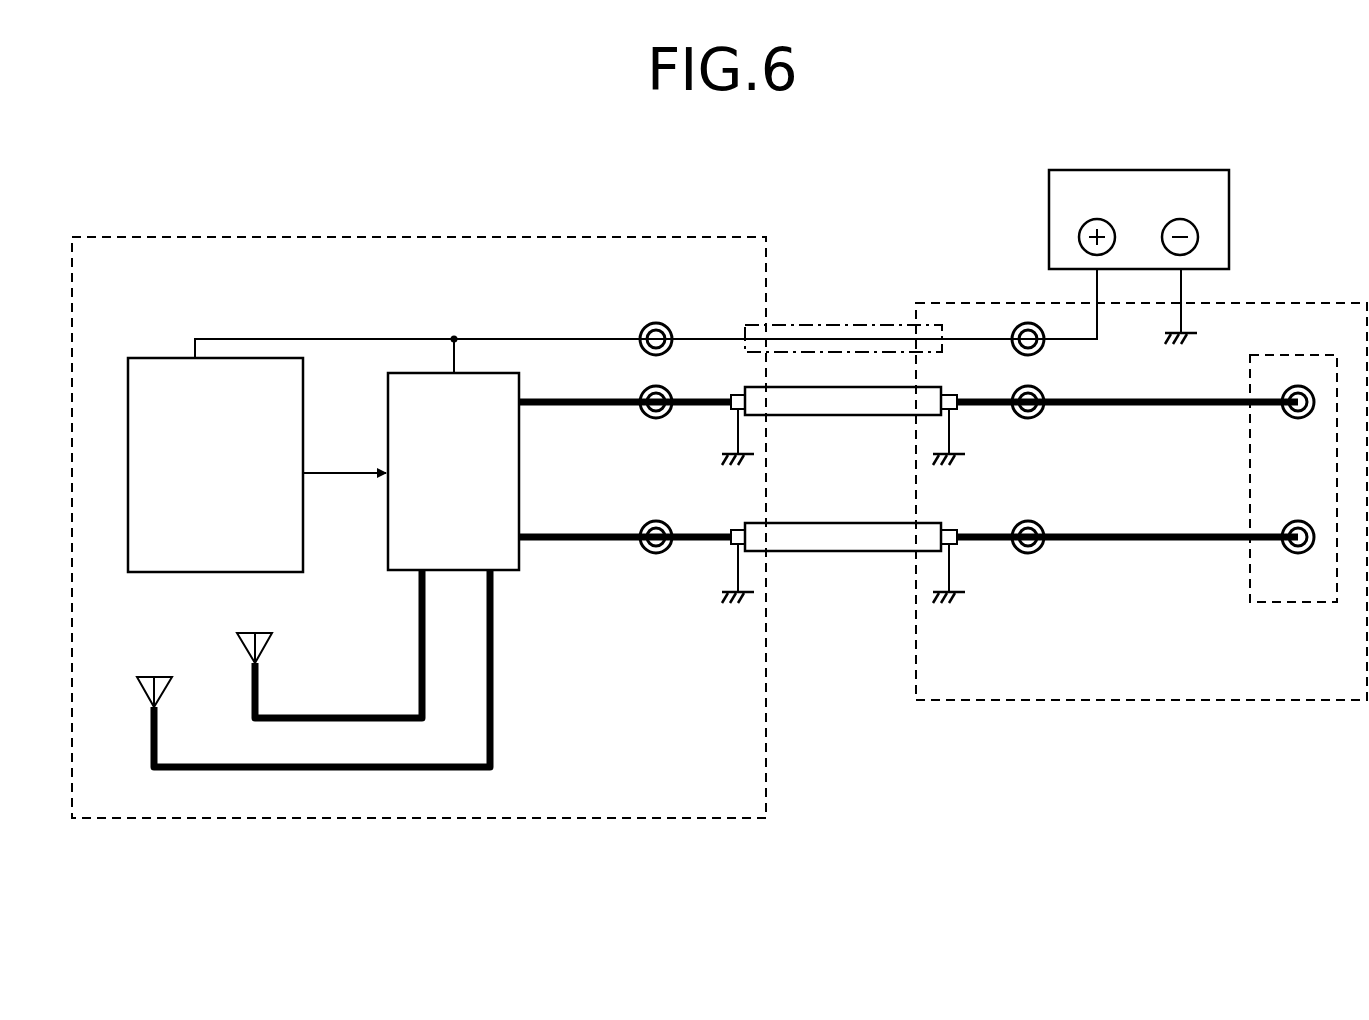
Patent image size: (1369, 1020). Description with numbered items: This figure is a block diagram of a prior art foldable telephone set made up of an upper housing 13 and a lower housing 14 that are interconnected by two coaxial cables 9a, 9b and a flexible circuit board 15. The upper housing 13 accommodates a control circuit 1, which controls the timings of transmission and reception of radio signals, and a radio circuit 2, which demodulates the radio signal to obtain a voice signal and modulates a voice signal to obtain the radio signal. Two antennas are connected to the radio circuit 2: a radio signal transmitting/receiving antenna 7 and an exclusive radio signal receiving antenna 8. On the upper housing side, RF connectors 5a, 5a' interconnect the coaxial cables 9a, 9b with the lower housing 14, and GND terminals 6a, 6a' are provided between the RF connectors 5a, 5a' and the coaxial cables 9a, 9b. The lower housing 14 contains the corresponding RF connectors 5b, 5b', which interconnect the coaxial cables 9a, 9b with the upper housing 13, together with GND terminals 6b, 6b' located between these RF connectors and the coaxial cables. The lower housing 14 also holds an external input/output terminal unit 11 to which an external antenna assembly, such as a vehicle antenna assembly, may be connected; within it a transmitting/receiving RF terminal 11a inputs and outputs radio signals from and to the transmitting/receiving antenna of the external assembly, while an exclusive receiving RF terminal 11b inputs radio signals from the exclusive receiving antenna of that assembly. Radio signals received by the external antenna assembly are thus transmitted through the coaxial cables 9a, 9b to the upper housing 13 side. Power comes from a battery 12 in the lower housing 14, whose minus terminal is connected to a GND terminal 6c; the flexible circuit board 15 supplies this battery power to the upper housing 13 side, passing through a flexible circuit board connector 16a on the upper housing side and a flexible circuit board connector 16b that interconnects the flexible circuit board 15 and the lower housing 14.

The control circuit 1 is at (145, 357).
The radio circuit 2 is at (416, 372).
The RF connector 5a is at (625, 525).
The RF connector 5a' is at (625, 390).
The RF connector 5b is at (1127, 549).
The RF connector 5b' is at (1127, 416).
The GND terminal 6a is at (707, 573).
The GND terminal 6a' is at (704, 437).
The GND terminal 6b is at (987, 578).
The GND terminal 6b' is at (985, 442).
The GND terminal 6c is at (1190, 345).
The radio signal transmitting/receiving antenna 7 is at (172, 700).
The exclusive radio signal receiving antenna 8 is at (272, 650).
The coaxial cable 9a is at (852, 552).
The coaxial cable 9b is at (852, 416).
The external input/output terminal unit 11 is at (1250, 592).
The transmitting/receiving RF terminal 11a is at (1304, 418).
The exclusive receiving RF terminal 11b is at (1304, 553).
The battery 12 is at (1229, 235).
The upper housing 13 is at (496, 237).
The lower housing 14 is at (1308, 303).
The flexible circuit board 15 is at (808, 326).
The flexible circuit board connector 16a is at (641, 334).
The flexible circuit board connector 16b is at (1040, 352).